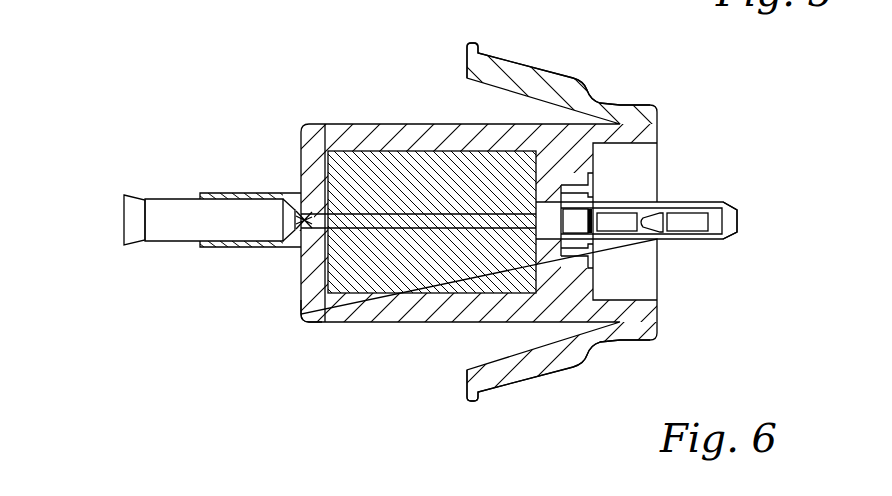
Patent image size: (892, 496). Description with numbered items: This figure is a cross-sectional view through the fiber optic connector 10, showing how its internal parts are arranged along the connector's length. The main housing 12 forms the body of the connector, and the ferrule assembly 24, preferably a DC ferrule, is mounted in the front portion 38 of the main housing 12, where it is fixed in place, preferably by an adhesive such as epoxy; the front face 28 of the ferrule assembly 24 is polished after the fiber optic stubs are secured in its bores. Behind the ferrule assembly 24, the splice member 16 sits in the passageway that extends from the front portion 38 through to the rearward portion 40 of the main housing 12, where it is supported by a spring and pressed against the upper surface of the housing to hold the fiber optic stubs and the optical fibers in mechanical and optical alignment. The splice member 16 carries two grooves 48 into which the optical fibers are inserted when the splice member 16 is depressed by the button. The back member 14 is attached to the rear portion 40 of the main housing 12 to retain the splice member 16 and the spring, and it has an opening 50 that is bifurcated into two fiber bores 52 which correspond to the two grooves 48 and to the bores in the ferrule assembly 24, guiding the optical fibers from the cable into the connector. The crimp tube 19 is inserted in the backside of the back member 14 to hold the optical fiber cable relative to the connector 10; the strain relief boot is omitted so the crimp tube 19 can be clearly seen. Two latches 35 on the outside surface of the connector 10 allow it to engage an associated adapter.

The fiber optic connector 10 is at (302, 79).
The main housing 12 is at (367, 314).
The back member 14 is at (299, 317).
The splice member 16 is at (443, 286).
The crimp tube 19 is at (168, 199).
The ferrule assembly 24 is at (710, 243).
The front face 28 is at (739, 228).
The latches 35 is at (557, 80).
The front portion 38 is at (597, 190).
The rearward portion 40 is at (324, 322).
The grooves 48 is at (410, 214).
The opening 50 is at (192, 248).
The fiber bores 52 is at (297, 197).